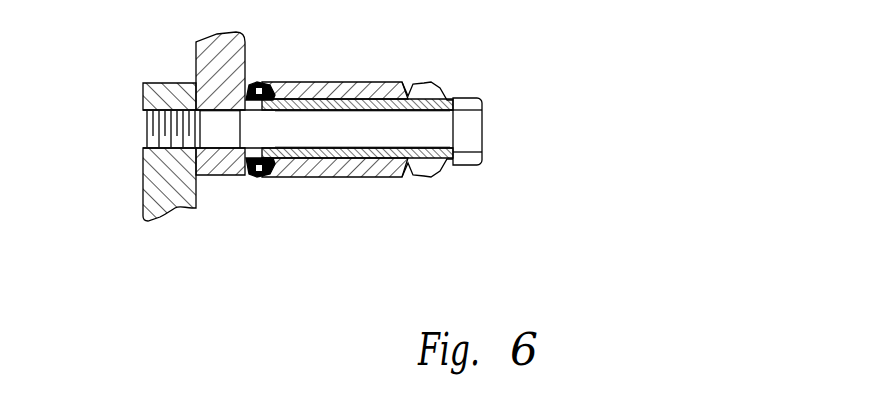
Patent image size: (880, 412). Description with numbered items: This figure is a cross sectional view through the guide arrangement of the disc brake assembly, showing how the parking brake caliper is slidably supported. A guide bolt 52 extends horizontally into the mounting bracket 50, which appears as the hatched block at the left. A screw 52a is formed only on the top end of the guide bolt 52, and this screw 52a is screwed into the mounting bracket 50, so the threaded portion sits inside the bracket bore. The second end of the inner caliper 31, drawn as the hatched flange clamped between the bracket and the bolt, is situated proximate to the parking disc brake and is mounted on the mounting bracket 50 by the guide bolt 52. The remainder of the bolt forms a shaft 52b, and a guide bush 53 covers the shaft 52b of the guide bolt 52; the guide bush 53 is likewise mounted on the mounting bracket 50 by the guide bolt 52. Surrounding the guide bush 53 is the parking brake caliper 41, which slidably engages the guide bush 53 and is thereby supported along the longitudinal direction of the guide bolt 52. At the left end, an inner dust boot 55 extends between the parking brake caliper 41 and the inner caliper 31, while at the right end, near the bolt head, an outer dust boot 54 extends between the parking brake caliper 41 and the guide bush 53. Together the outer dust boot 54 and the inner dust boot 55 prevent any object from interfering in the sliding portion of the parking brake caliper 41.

The inner caliper 31 is at (247, 56).
The parking brake caliper 41 is at (360, 80).
The mounting bracket 50 is at (143, 172).
The guide bolt 52 is at (483, 119).
The screw 52a is at (223, 135).
The shaft 52b is at (386, 128).
The guide bush 53 is at (341, 170).
The outer dust boot 54 is at (433, 178).
The inner dust boot 55 is at (265, 175).